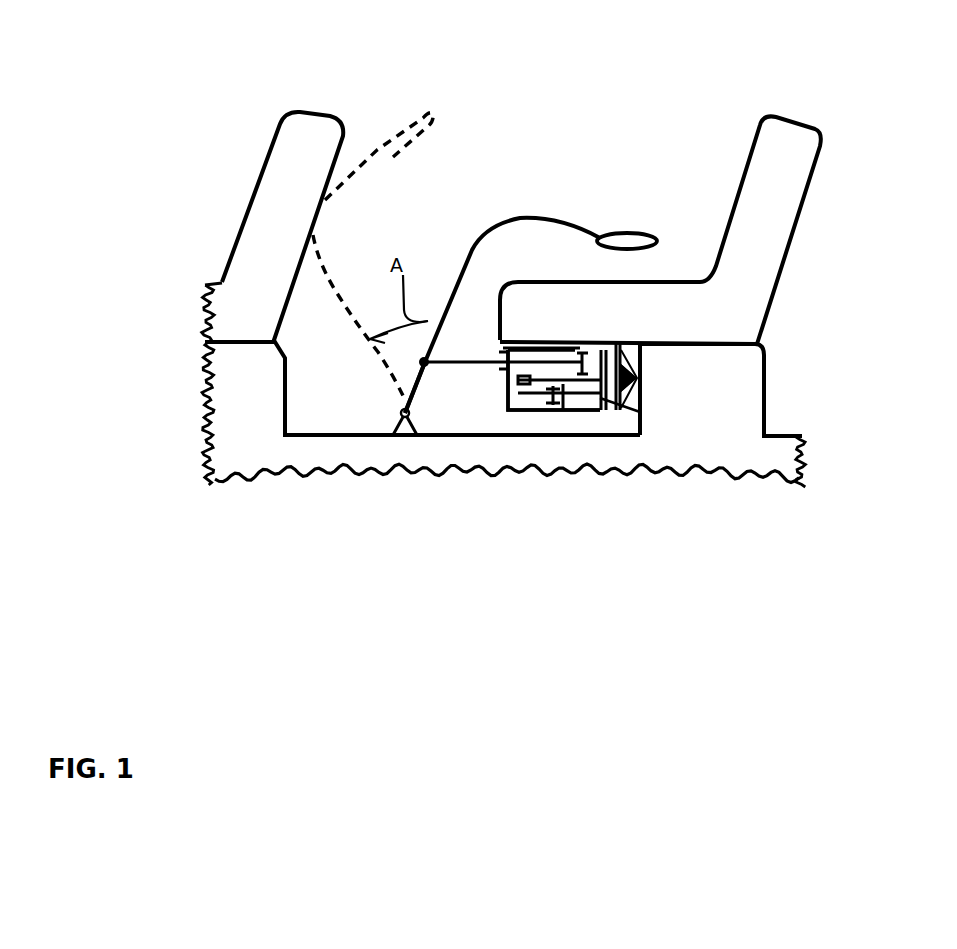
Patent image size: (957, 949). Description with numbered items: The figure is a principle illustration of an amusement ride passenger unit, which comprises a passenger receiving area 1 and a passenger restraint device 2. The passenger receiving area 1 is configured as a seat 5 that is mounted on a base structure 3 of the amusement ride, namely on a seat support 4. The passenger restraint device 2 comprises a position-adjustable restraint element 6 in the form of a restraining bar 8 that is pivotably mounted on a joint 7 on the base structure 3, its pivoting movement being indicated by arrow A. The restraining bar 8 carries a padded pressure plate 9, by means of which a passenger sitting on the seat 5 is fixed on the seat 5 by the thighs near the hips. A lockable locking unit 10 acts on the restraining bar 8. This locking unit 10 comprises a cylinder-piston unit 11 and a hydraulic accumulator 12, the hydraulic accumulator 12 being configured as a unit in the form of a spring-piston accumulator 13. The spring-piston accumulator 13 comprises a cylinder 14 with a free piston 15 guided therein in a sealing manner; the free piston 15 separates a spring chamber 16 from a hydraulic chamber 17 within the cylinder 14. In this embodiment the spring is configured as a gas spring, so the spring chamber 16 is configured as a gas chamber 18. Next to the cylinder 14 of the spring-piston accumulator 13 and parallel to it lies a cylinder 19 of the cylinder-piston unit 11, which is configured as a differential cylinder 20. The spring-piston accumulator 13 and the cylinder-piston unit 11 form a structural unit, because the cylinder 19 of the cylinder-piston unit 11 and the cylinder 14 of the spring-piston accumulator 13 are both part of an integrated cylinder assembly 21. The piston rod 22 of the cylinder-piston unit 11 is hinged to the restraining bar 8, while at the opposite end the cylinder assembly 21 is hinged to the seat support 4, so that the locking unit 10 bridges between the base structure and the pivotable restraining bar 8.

The passenger receiving area 1 is at (623, 113).
The passenger restraint device 2 is at (406, 382).
The base structure 3 is at (797, 404).
The seat support 4 is at (748, 372).
The seat 5 is at (785, 142).
The position-adjustable restraint element 6 is at (466, 108).
The joint 7 is at (413, 418).
The restraining bar 8 is at (518, 216).
The padded pressure plate 9 is at (637, 235).
The lockable locking unit 10 is at (548, 417).
The cylinder-piston unit 11 is at (529, 333).
The hydraulic accumulator 12 is at (615, 410).
The spring-piston accumulator 13 is at (629, 378).
The cylinder 14 is at (593, 403).
The free piston 15 is at (563, 402).
The spring chamber 16 is at (530, 398).
The hydraulic chamber 17 is at (605, 399).
The gas chamber 18 is at (554, 380).
The cylinder 19 is at (575, 352).
The differential cylinder 20 is at (415, 387).
The integrated cylinder assembly 21 is at (622, 349).
The piston rod 22 is at (459, 367).